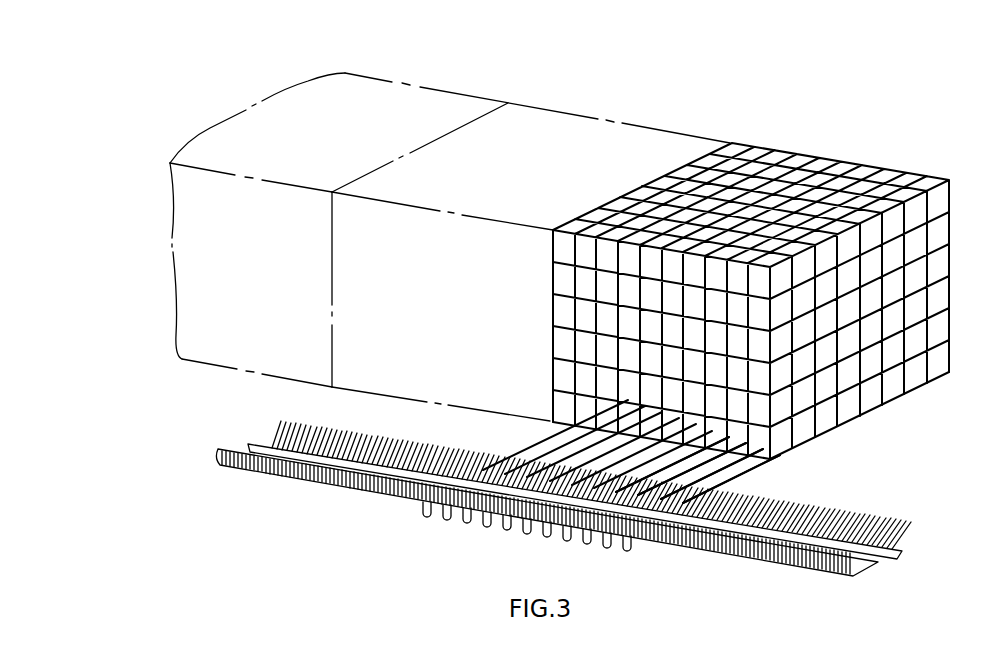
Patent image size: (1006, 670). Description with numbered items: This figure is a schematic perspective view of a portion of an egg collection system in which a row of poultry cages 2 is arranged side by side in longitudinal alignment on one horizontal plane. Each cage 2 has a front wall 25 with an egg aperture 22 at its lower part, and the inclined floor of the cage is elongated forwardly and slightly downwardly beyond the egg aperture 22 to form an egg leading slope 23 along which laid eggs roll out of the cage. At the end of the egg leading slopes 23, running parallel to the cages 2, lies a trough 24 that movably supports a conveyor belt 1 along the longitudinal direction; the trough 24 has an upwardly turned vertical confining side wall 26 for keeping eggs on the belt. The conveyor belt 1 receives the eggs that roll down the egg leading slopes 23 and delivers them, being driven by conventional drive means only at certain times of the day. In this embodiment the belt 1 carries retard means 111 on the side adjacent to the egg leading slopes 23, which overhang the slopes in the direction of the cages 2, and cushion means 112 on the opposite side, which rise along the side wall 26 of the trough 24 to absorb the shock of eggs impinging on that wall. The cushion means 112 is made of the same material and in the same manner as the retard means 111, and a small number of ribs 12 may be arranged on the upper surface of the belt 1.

The conveyor belt 1 is at (598, 517).
The poultry cage 2 is at (582, 245).
The ribs 12 is at (895, 559).
The egg aperture 22 is at (727, 425).
The egg leading slope 23 is at (720, 463).
The trough 24 is at (637, 540).
The front wall 25 is at (728, 367).
The side wall 26 is at (497, 519).
The retard means 111 is at (913, 531).
The cushion means 112 is at (810, 562).